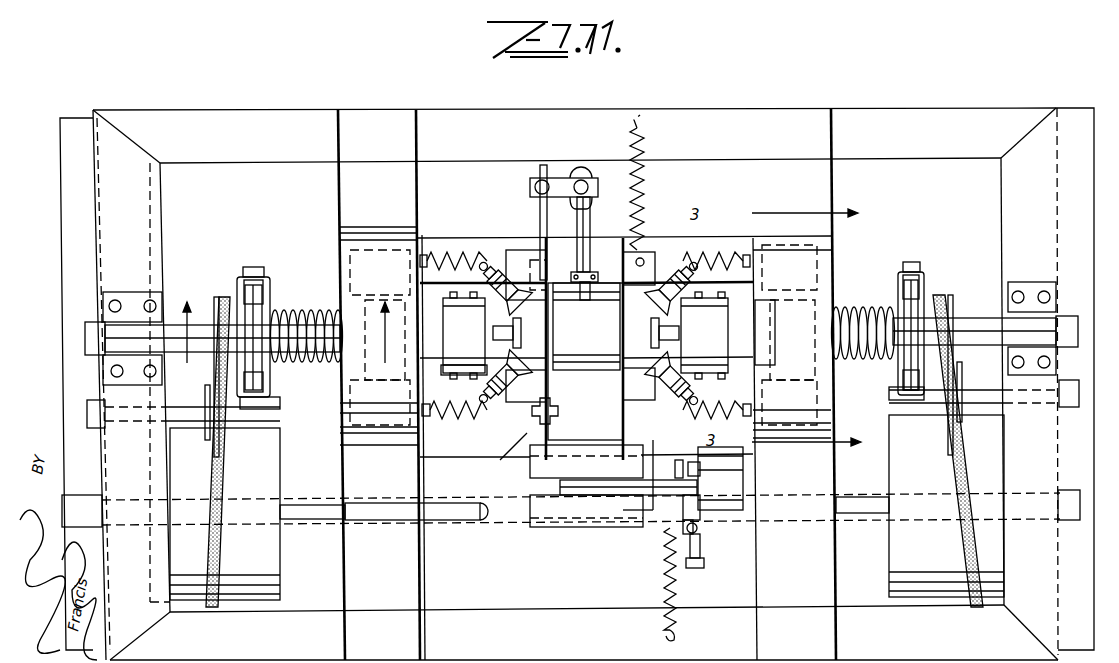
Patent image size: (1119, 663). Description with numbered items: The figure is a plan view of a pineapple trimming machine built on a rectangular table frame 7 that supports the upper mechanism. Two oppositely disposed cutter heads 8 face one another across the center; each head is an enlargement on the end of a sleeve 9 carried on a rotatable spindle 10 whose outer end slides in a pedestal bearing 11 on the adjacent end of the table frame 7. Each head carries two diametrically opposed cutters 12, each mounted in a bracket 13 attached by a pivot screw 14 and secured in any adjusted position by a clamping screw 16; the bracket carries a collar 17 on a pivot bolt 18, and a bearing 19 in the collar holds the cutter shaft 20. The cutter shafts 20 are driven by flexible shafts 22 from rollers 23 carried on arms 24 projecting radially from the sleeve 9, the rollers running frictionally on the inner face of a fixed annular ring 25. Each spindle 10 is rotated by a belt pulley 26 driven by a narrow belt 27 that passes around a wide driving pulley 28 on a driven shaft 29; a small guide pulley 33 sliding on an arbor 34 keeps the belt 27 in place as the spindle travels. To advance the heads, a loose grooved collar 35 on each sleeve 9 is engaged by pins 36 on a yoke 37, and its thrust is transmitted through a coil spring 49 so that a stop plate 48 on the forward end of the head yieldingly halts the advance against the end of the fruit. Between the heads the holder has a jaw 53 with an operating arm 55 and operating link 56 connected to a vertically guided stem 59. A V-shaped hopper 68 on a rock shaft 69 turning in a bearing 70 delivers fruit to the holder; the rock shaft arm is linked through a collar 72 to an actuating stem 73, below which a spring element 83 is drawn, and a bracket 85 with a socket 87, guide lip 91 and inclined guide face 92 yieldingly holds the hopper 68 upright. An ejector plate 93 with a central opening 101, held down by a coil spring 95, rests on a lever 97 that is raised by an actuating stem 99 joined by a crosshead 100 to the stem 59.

The table frame 7 is at (686, 118).
The cutter head 8 is at (434, 298).
The sleeve 9 is at (745, 332).
The spindle 10 is at (84, 324).
The pedestal bearing 11 is at (1116, 290).
The cutter 12 is at (588, 333).
The bracket 13 is at (445, 372).
The pivot screw 14 is at (596, 338).
The clamping screw 16 is at (594, 338).
The collar 17 is at (510, 400).
The pivot bolt 18 is at (464, 335).
The bearing 19 is at (558, 412).
The cutter shaft 20 is at (496, 270).
The flexible shaft 22 is at (466, 422).
The roller 23 is at (382, 284).
The arm 24 is at (398, 352).
The annular ring 25 is at (338, 236).
The belt pulley 26 is at (215, 297).
The belt 27 is at (224, 480).
The driving pulley 28 is at (278, 478).
The driven shaft 29 is at (312, 522).
The guide pulley 33 is at (207, 404).
The arbor 34 is at (268, 408).
The loose collar 35 is at (264, 300).
The pin 36 is at (264, 286).
The yoke 37 is at (244, 275).
The stop plate 48 is at (650, 338).
The coil spring 49 is at (300, 312).
The jaw 53 is at (586, 326).
The operating arm 55 is at (592, 294).
The operating link 56 is at (591, 256).
The stem 59 is at (600, 178).
The hopper 68 is at (552, 522).
The rock shaft 69 is at (617, 486).
The bearing 70 is at (745, 470).
The collar 72 is at (707, 546).
The actuating stem 73 is at (705, 563).
The spring 83 is at (680, 592).
The bracket 85 is at (676, 490).
The socket 87 is at (702, 500).
The guide lip 91 is at (698, 528).
The guide face 92 is at (680, 515).
The ejector plate 93 is at (502, 454).
The coil spring 95 is at (647, 200).
The lever 97 is at (538, 200).
The actuating stem 99 is at (538, 180).
The crosshead 100 is at (570, 178).
The central opening 101 is at (600, 376).